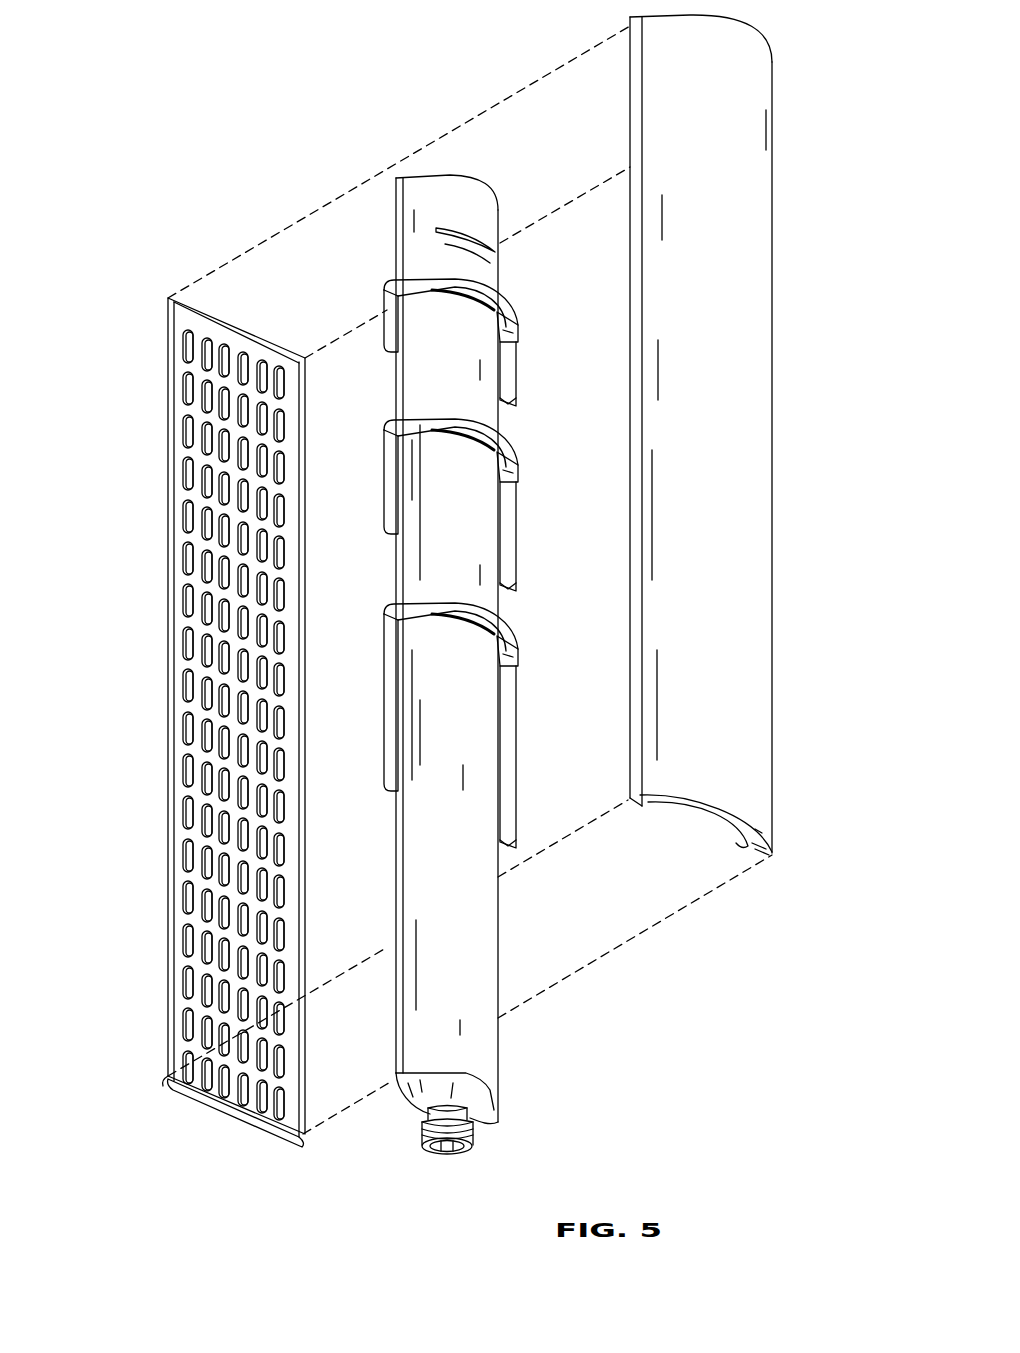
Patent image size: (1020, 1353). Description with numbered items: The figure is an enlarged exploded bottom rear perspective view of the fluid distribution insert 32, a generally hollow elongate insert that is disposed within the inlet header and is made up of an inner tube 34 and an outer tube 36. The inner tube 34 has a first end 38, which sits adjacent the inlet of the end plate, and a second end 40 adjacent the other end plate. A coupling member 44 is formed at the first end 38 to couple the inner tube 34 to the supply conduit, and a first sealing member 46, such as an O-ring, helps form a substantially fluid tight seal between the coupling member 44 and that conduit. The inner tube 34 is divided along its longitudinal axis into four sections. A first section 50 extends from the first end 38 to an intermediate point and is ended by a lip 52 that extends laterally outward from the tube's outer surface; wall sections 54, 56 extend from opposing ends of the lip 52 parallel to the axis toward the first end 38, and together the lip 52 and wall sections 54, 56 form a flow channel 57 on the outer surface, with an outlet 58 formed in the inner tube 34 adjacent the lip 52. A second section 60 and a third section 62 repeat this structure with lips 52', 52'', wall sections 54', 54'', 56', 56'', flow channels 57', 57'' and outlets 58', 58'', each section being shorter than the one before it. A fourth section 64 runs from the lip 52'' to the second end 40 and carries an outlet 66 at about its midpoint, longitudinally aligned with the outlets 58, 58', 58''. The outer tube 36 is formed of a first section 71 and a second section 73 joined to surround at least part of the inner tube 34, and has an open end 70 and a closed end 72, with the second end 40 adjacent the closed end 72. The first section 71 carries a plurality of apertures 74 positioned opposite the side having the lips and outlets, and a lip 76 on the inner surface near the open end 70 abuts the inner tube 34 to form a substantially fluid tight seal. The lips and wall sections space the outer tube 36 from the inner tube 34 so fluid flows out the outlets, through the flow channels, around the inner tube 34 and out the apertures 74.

The fluid distribution insert 32 is at (130, 433).
The inner tube 34 is at (500, 898).
The outer tube 36 is at (774, 193).
The first end 38 is at (496, 1116).
The second end 40 is at (470, 178).
The coupling member 44 is at (434, 1150).
The first sealing member 46 is at (424, 1130).
The first section 50 is at (455, 890).
The lip 52 is at (487, 626).
The lip 52' is at (490, 440).
The lip 52'' is at (493, 303).
The wall section 54 is at (545, 757).
The wall section 54' is at (548, 536).
The wall section 54'' is at (551, 374).
The wall section 56 is at (369, 702).
The wall section 56' is at (368, 482).
The wall section 56'' is at (369, 328).
The flow channel 57 is at (544, 650).
The flow channel 57' is at (547, 464).
The flow channel 57'' is at (549, 327).
The outlet 58 is at (366, 616).
The outlet 58' is at (365, 433).
The outlet 58'' is at (365, 281).
The second section 60 is at (445, 567).
The third section 62 is at (445, 408).
The fourth section 64 is at (442, 260).
The outlet 66 is at (446, 228).
The open end 70 is at (166, 1087).
The first section 71 is at (168, 313).
The closed end 72 is at (745, 26).
The second section 73 is at (764, 95).
The apertures 74 is at (190, 1028).
The lip 76 is at (745, 849).